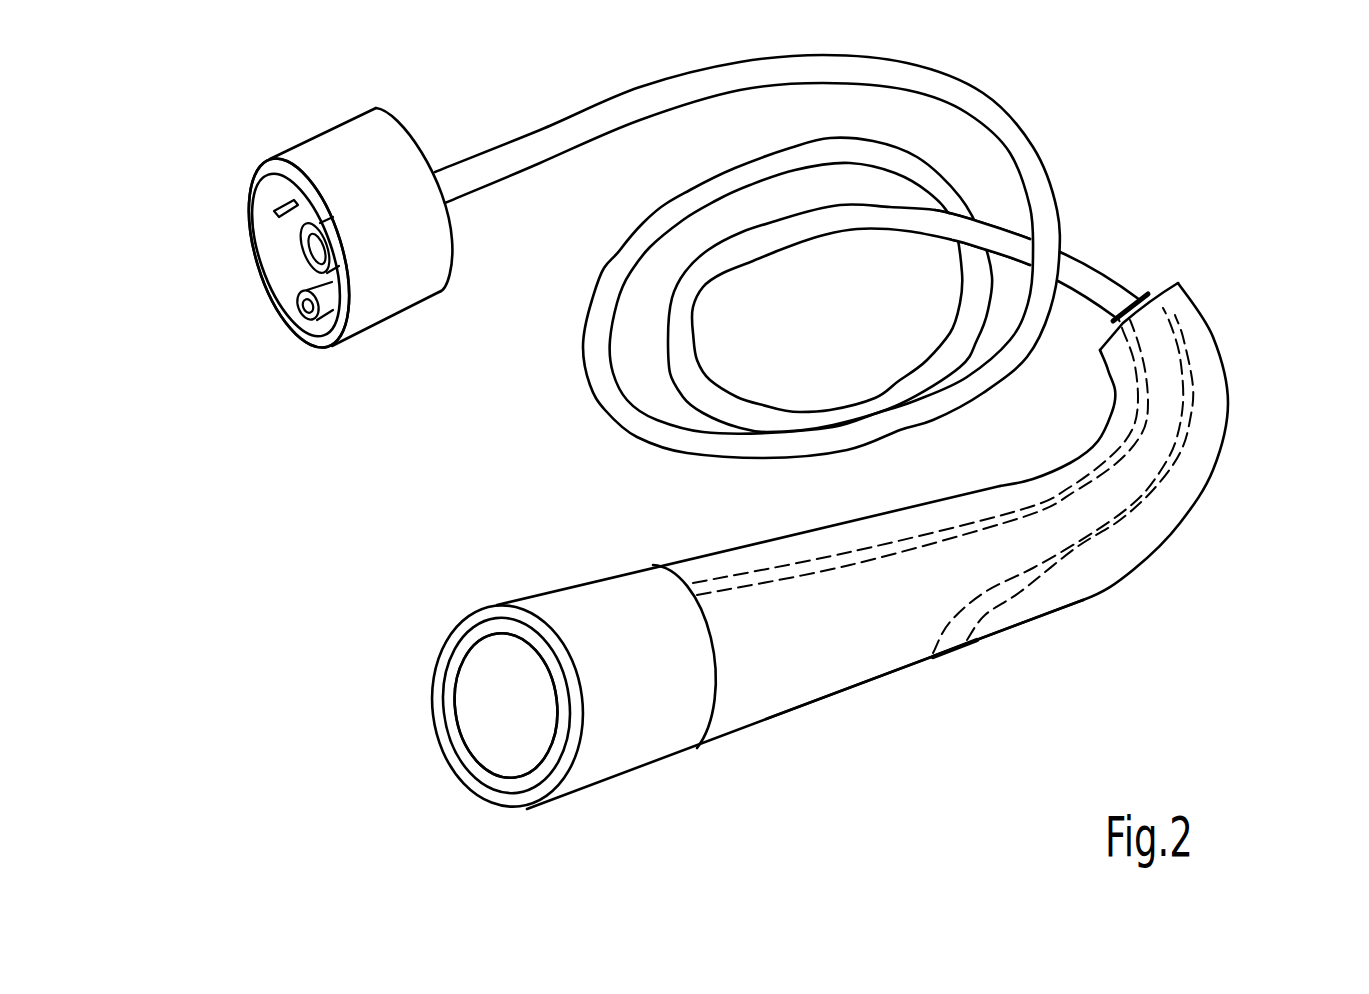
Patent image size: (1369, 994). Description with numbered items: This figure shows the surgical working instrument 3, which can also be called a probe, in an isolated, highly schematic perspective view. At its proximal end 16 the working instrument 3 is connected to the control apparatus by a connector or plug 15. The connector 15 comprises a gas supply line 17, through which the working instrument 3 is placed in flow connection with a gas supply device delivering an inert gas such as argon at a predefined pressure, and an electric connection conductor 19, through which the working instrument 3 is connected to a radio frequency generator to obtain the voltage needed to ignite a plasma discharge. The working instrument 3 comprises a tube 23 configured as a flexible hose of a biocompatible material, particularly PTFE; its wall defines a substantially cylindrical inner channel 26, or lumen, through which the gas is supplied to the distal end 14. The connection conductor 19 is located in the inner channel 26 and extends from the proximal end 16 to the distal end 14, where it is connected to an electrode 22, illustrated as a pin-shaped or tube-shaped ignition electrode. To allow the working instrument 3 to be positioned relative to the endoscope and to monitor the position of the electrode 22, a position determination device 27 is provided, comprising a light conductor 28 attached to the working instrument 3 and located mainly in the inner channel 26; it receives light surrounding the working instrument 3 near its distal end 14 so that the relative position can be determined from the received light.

The working instrument 3 is at (1160, 165).
The distal end 14 is at (460, 599).
The connector 15 is at (388, 157).
The proximal end 16 is at (326, 380).
The gas supply line 17 is at (307, 248).
The electric connection conductor 19 is at (282, 212).
The electrode 22 is at (500, 758).
The tube 23 is at (1185, 517).
The inner channel 26 is at (482, 712).
The position determination device 27 is at (937, 705).
The light conductor 28 is at (1113, 532).